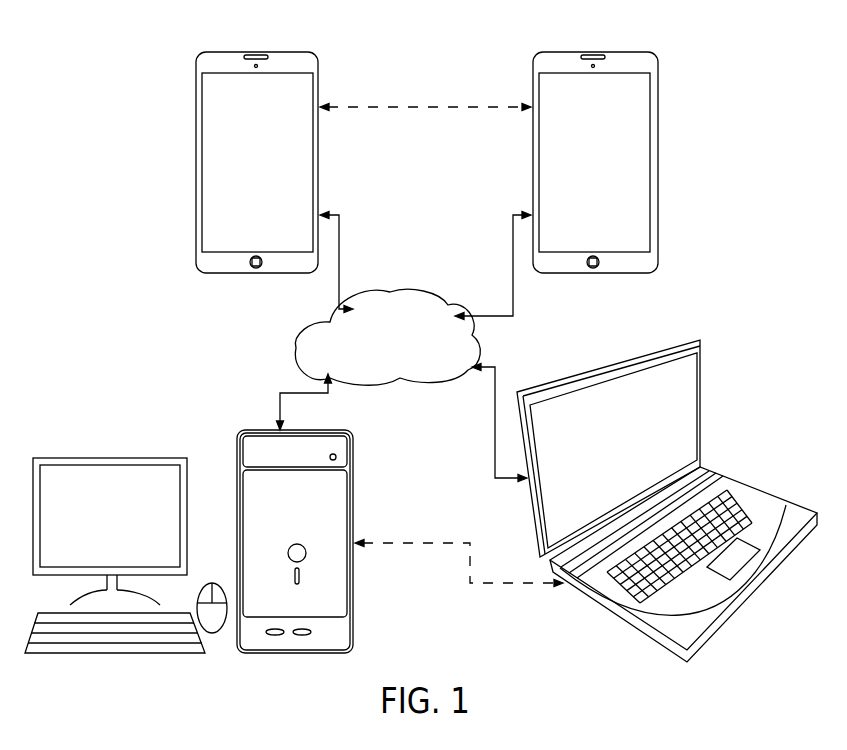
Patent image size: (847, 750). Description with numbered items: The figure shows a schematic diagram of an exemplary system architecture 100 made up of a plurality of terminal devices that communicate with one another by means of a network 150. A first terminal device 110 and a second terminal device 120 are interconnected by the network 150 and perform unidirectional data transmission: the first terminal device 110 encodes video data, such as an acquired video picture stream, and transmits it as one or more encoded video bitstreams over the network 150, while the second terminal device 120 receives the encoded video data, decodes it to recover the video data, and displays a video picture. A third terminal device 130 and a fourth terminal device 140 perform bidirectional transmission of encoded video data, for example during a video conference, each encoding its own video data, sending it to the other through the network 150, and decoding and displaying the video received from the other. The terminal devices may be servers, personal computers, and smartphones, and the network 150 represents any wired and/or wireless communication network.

The system architecture 100 is at (746, 46).
The first terminal device 110 is at (700, 392).
The second terminal device 120 is at (351, 503).
The third terminal device 130 is at (196, 180).
The fourth terminal device 140 is at (657, 196).
The network 150 is at (387, 337).